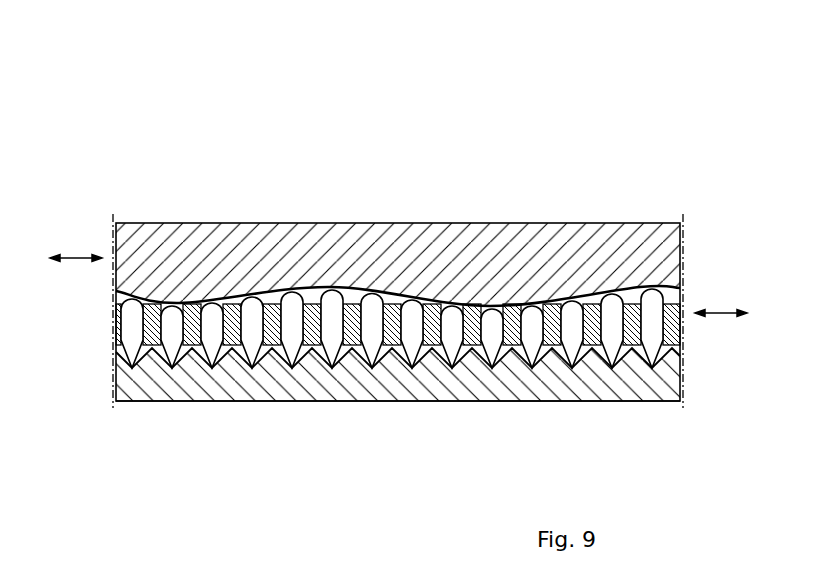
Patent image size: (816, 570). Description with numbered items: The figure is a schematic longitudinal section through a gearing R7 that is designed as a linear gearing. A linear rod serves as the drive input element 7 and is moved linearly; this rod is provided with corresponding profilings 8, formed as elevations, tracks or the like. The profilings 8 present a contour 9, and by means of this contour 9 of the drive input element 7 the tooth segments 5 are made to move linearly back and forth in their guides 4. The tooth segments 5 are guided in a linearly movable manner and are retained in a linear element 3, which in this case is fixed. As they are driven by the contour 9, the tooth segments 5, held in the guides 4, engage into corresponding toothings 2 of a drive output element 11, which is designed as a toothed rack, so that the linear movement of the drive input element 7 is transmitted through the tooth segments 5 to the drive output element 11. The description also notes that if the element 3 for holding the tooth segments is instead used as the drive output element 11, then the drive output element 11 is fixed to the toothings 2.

The toothings 2 is at (362, 355).
The linear element 3 is at (631, 325).
The guides 4 is at (398, 412).
The tooth segments 5 is at (572, 305).
The drive input element 7 is at (398, 264).
The profilings 8 is at (198, 246).
The contour 9 is at (423, 299).
The drive output element 11 is at (397, 411).
The gearing R7 is at (542, 124).